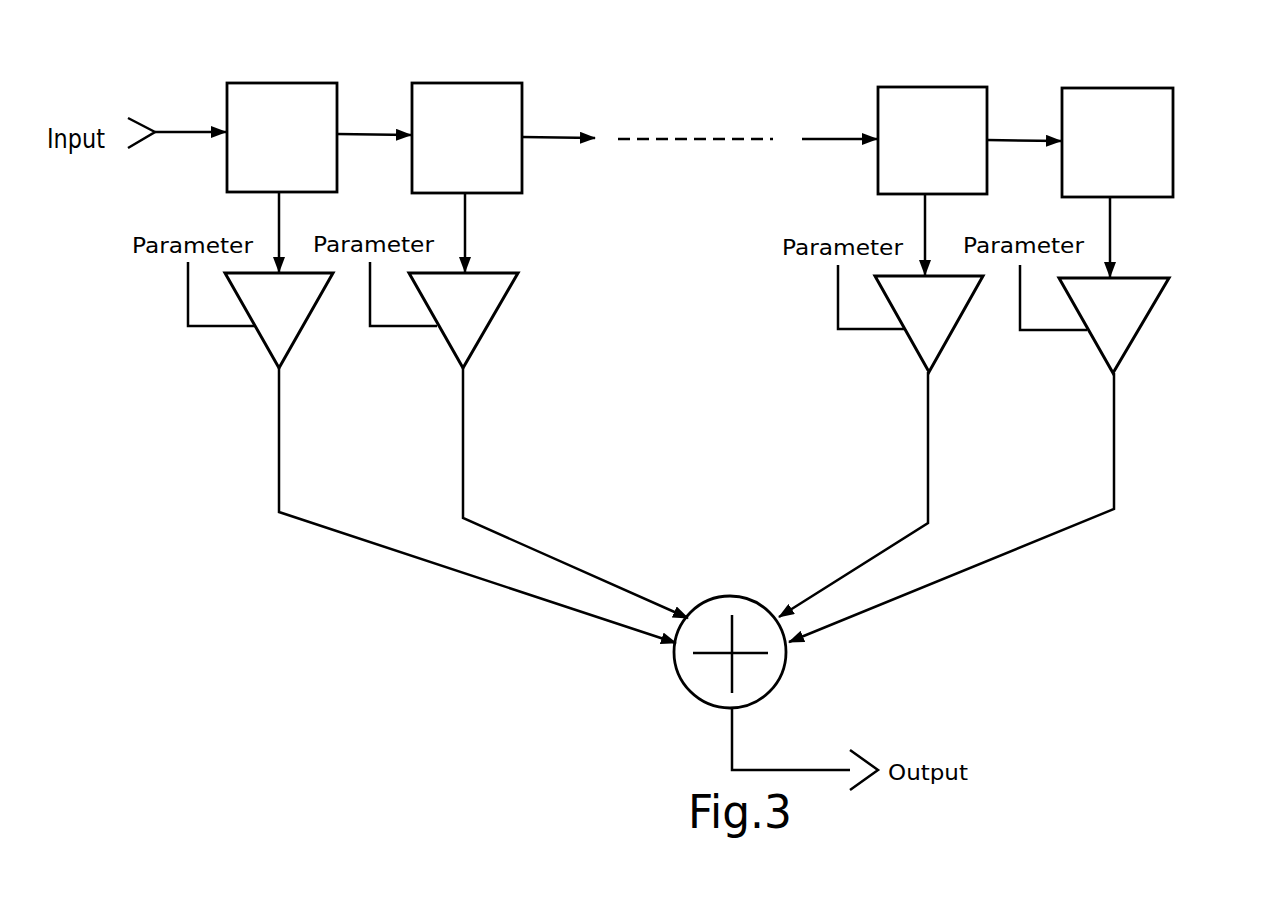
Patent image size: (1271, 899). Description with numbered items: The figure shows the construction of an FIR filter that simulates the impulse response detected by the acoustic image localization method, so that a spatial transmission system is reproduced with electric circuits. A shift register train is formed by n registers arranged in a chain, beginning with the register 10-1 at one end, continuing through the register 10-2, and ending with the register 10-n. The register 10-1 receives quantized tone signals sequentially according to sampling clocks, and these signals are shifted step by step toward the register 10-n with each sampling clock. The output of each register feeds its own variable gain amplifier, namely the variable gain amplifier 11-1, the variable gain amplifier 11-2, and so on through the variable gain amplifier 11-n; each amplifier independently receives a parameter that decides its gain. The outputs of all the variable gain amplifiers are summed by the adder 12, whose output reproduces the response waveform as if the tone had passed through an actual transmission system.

The register 10-1 is at (337, 83).
The register 10-2 is at (522, 83).
The register 10-n is at (1172, 89).
The variable gain amplifier 11-1 is at (258, 340).
The variable gain amplifier 11-2 is at (445, 345).
The variable gain amplifier 11-n is at (1092, 347).
The adder 12 is at (703, 600).